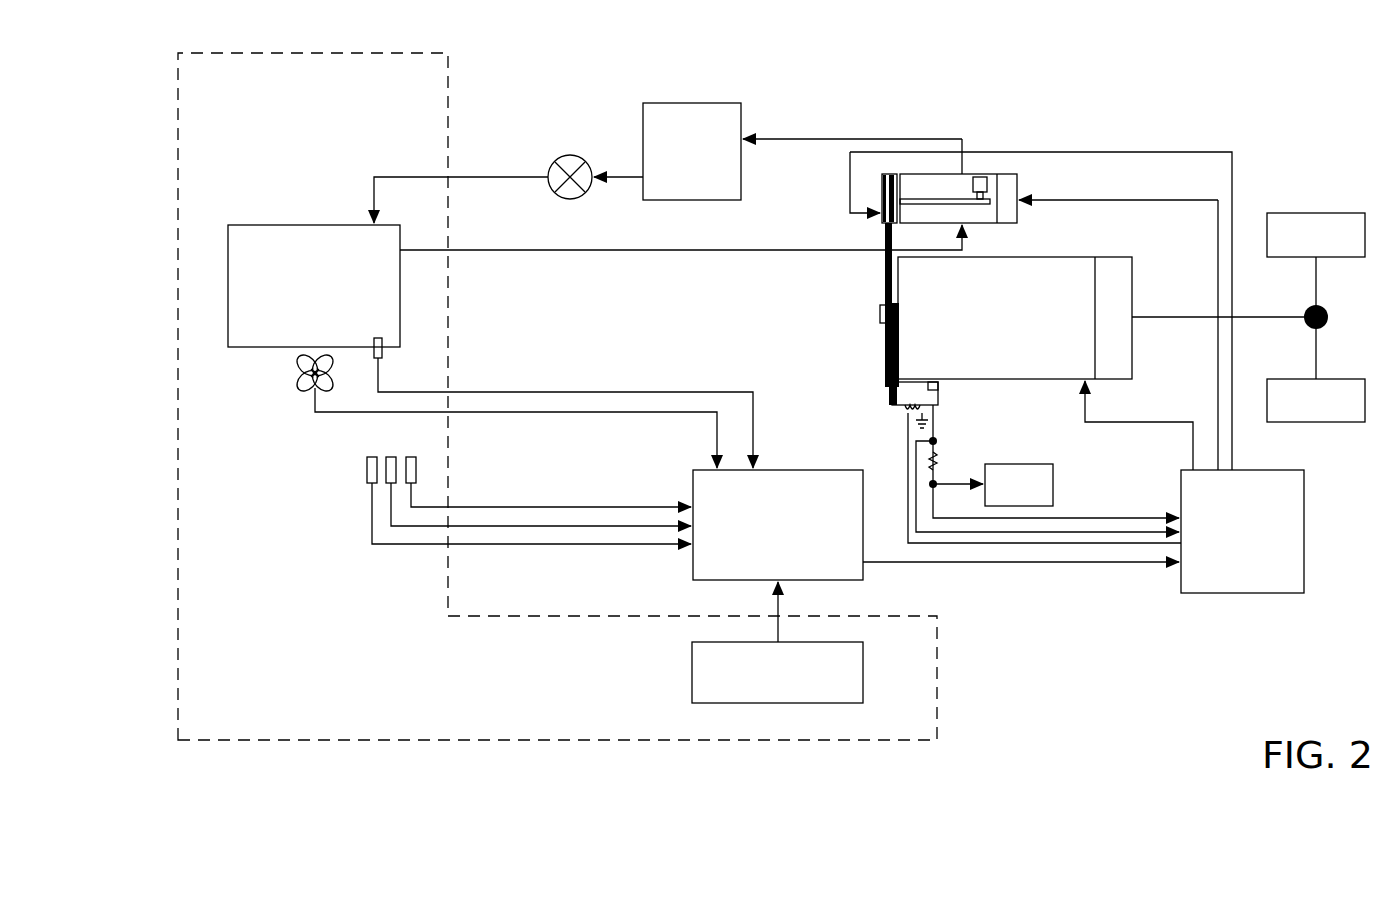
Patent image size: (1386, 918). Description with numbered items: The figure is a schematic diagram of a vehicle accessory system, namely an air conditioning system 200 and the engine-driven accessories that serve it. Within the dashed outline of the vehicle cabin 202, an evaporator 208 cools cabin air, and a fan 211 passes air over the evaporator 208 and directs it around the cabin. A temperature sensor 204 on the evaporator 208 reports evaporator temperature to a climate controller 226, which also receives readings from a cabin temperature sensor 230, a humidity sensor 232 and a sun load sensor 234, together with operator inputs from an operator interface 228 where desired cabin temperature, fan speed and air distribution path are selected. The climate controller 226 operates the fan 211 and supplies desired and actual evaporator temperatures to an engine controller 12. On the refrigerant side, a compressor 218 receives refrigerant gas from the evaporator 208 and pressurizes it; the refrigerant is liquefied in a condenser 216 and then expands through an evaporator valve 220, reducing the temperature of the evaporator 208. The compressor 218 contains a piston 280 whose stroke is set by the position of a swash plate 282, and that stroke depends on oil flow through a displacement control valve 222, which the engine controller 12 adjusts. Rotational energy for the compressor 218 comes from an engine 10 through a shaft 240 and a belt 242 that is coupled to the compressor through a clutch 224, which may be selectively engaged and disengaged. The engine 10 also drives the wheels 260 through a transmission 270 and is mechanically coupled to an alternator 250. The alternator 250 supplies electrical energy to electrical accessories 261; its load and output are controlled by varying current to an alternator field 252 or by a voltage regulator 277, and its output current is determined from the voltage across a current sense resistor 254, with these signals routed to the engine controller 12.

The air conditioning system 200 is at (1228, 30).
The vehicle cabin 202 is at (232, 742).
The evaporator 208 is at (232, 225).
The temperature sensor 204 is at (374, 356).
The fan 211 is at (300, 382).
The condenser 216 is at (643, 103).
The evaporator valve 220 is at (562, 199).
The displacement control valve 222 is at (1017, 178).
The compressor 218 is at (975, 225).
The clutch 224 is at (872, 216).
The belt 242 is at (880, 262).
The shaft 240 is at (879, 325).
The transmission 270 is at (1132, 257).
The engine 10 is at (1080, 380).
The alternator 250 is at (938, 400).
The alternator field 252 is at (900, 414).
The current sense resistor 254 is at (955, 458).
The electrical accessories 261 is at (1037, 497).
The wheels 260 is at (1332, 246).
The voltage regulator 277 is at (938, 386).
The piston 280 is at (978, 176).
The swash plate 282 is at (987, 197).
The climate controller 226 is at (863, 580).
The operator interface 228 is at (863, 703).
The cabin temperature sensor 230 is at (369, 457).
The humidity sensor 232 is at (424, 445).
The sun load sensor 234 is at (389, 457).
The engine controller 12 is at (1304, 470).